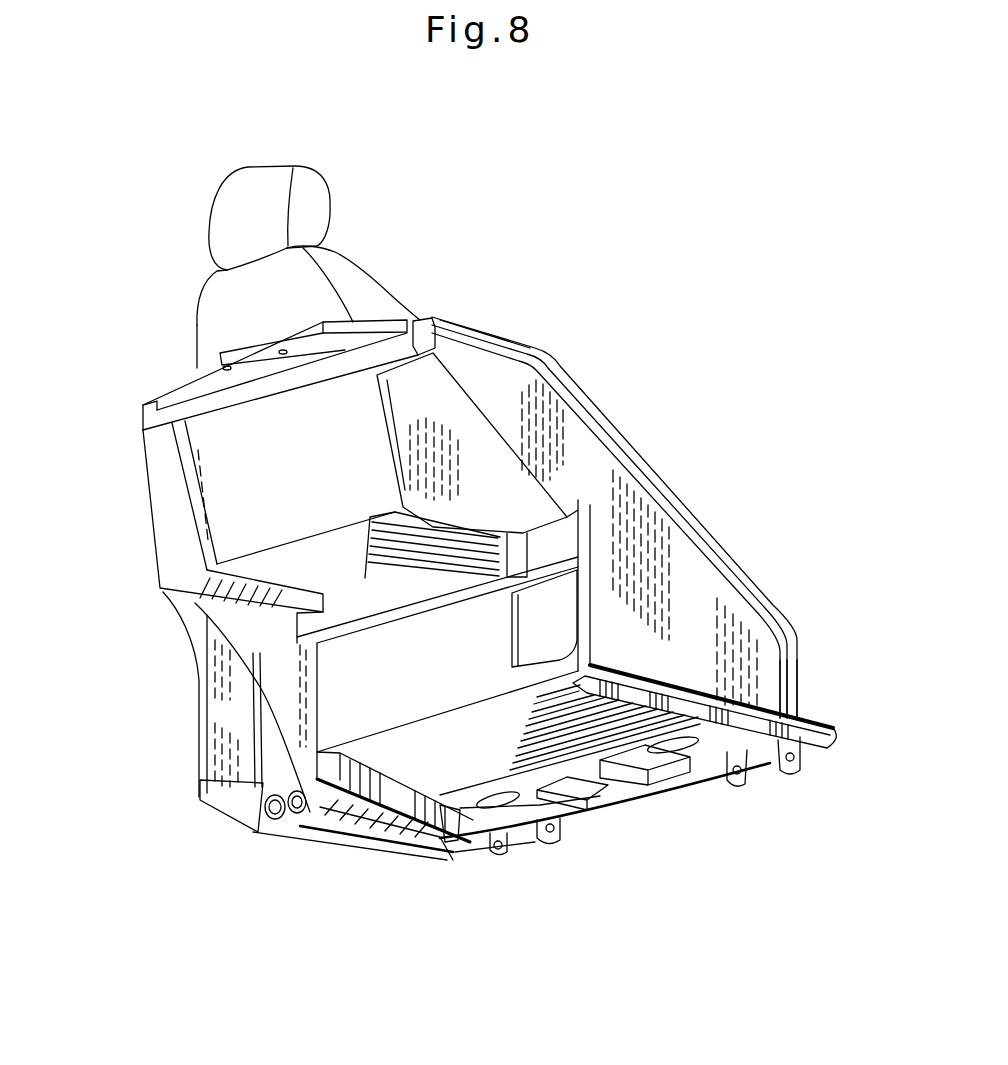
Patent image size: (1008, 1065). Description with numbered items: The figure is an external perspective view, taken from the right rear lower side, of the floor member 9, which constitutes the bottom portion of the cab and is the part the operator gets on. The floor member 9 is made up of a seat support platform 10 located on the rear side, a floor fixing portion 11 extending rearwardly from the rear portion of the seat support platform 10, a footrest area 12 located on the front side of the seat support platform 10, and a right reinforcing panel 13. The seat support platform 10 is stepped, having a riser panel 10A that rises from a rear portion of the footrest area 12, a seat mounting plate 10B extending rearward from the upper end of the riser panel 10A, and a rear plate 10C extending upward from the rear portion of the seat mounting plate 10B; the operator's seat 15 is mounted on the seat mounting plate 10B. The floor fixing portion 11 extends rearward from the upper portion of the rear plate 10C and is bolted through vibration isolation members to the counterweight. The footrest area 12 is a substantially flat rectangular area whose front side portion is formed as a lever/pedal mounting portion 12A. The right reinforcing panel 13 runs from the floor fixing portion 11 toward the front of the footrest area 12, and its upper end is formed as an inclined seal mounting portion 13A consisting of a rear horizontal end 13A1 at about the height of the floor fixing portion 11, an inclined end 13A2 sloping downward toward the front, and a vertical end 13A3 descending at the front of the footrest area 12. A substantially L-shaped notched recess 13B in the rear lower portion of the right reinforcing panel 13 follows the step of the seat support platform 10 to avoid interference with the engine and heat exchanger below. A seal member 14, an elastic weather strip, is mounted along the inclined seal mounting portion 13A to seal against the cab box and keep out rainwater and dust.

The floor member 9 is at (407, 777).
The seat support platform 10 is at (315, 626).
The riser panel 10A is at (353, 693).
The seat mounting plate 10B is at (293, 600).
The rear plate 10C is at (215, 487).
The floor fixing portion 11 is at (187, 383).
The footrest area 12 is at (620, 813).
The lever/pedal mounting portion 12A is at (547, 800).
The right reinforcing panel 13 is at (629, 485).
The inclined seal mounting portion 13A is at (720, 583).
The horizontal end 13A1 is at (488, 352).
The inclined end 13A2 is at (623, 477).
The vertical end 13A3 is at (773, 688).
The notched recess 13B is at (541, 497).
The seal member 14 is at (667, 485).
The operator's seat 15 is at (360, 282).